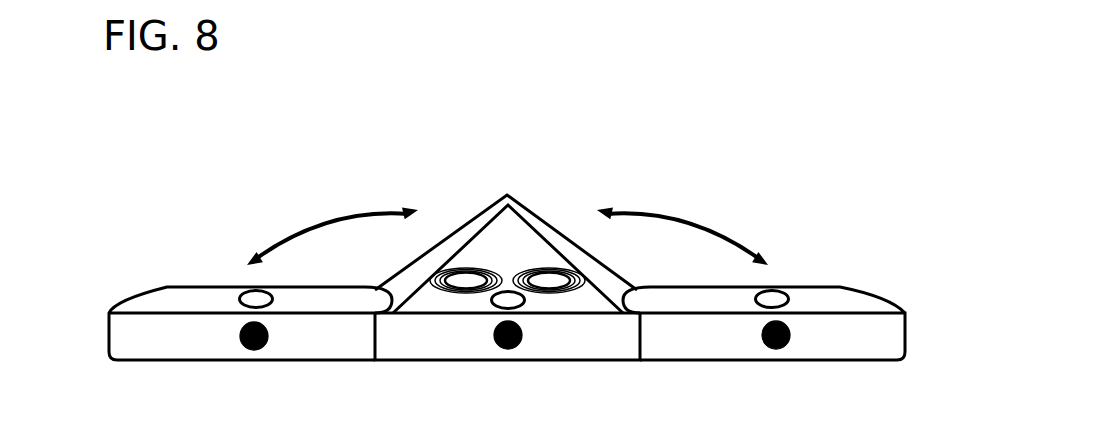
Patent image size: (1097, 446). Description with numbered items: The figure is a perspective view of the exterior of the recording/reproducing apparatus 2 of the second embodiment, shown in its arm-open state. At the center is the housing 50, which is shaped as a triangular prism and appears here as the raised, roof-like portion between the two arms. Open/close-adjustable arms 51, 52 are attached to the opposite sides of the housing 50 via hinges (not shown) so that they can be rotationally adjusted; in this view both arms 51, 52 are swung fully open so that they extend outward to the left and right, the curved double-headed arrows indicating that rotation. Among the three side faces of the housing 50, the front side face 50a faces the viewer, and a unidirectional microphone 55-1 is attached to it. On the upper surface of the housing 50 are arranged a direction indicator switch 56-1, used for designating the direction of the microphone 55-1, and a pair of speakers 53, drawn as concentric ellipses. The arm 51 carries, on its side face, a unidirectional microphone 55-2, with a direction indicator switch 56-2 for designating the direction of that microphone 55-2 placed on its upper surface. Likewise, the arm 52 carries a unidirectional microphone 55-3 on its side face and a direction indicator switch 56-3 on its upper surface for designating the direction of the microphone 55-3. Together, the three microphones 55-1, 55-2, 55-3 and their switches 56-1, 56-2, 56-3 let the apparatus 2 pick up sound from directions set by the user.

The recording/reproducing apparatus 2 is at (725, 160).
The housing 50 is at (498, 200).
The front side face 50a is at (402, 337).
The arm 51 is at (340, 357).
The arm 52 is at (670, 353).
The speakers 53 is at (467, 268).
The unidirectional microphone 55-1 is at (508, 349).
The unidirectional microphone 55-2 is at (255, 350).
The unidirectional microphone 55-3 is at (777, 349).
The direction indicator switch 56-1 is at (518, 305).
The direction indicator switch 56-2 is at (246, 306).
The direction indicator switch 56-3 is at (785, 305).